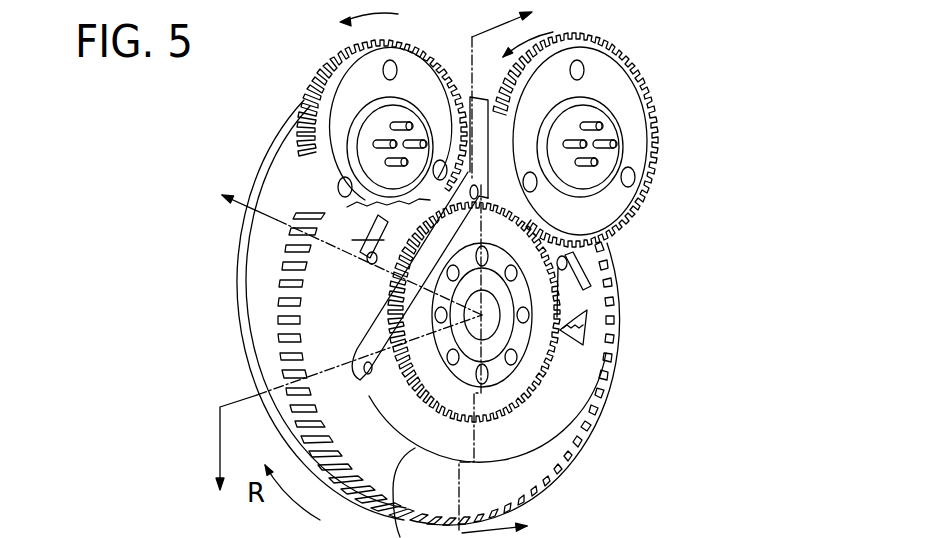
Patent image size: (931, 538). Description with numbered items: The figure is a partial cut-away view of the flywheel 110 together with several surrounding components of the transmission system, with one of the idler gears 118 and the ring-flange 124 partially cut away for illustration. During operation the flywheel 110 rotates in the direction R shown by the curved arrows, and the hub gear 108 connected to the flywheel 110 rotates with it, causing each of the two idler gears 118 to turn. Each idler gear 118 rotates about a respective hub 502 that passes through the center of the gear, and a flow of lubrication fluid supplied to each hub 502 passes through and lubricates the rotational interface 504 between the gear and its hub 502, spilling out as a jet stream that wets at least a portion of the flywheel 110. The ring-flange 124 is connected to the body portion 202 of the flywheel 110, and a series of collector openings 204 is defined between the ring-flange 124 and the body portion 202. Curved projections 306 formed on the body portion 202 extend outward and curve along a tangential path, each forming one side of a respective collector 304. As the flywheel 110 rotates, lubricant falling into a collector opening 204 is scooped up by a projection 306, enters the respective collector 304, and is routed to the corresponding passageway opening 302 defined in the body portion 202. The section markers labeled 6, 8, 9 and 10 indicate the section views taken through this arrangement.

The idler gear 118 is at (367, 66).
The hub 502 is at (380, 125).
The rotational interface 504 is at (353, 137).
The flywheel 110 is at (280, 206).
The section line 10- 10 is at (326, 240).
The section line 8- 8 is at (346, 422).
The section line 6- 6 is at (582, 269).
The section line 9- 9 is at (582, 269).
The collector 304 is at (366, 251).
The passageway opening 302 is at (345, 323).
The collector opening 204 is at (352, 276).
The curved projection 306 is at (578, 268).
The body portion 202 is at (593, 342).
The ring-flange 124 is at (568, 355).
The hub gear 108 is at (605, 355).